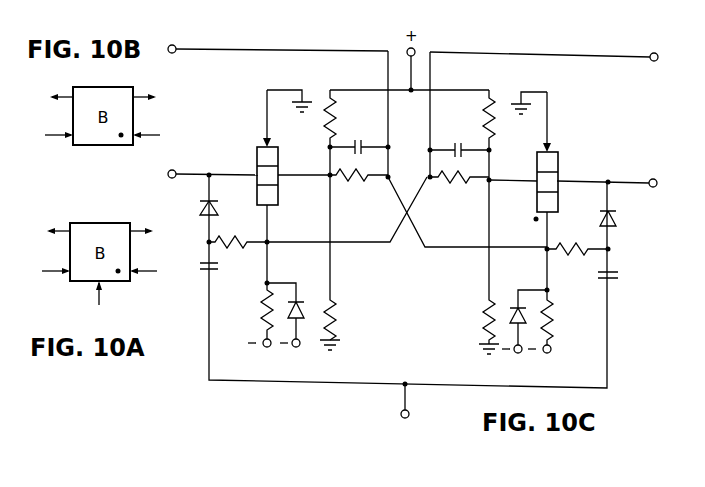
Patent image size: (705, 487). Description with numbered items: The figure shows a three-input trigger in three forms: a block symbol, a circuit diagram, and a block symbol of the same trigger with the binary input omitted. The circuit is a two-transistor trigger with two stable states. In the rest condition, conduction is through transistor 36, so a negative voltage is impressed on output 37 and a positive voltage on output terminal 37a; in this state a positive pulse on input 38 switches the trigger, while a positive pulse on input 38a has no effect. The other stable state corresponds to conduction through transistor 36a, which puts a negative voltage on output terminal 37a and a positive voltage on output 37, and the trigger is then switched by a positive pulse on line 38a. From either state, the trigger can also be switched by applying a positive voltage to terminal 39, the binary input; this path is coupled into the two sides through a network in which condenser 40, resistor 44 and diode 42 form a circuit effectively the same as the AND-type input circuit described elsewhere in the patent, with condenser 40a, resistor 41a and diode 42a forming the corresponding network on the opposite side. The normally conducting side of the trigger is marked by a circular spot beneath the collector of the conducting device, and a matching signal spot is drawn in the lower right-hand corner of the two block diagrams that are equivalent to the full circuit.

In FIG. 10C, the transistor 36 is at (280, 175).
In FIG. 10C, the transistor 36a is at (559, 181).
In FIG. 10B, the output 37 is at (156, 98).
In FIG. 10A, the output 37 is at (153, 232).
In FIG. 10C, the output 37 is at (628, 57).
In FIG. 10B, the output terminal 37a is at (44, 98).
In FIG. 10A, the output terminal 37a is at (41, 232).
In FIG. 10C, the output terminal 37a is at (222, 50).
In FIG. 10B, the input 38 is at (158, 136).
In FIG. 10A, the input 38 is at (155, 272).
In FIG. 10C, the input 38 is at (643, 182).
In FIG. 10B, the input 38a is at (43, 136).
In FIG. 10A, the input 38a is at (40, 272).
In FIG. 10C, the input 38a is at (181, 173).
In FIG. 10A, the binary input terminal 39 is at (101, 305).
In FIG. 10C, the binary input terminal 39 is at (406, 418).
In FIG. 10C, the condenser 40 is at (615, 277).
In FIG. 10C, the condenser 40a is at (200, 268).
In FIG. 10C, the resistor 41a is at (243, 247).
In FIG. 10C, the diode 42 is at (616, 218).
In FIG. 10C, the diode 42a is at (217, 208).
In FIG. 10C, the resistor 44 is at (568, 258).